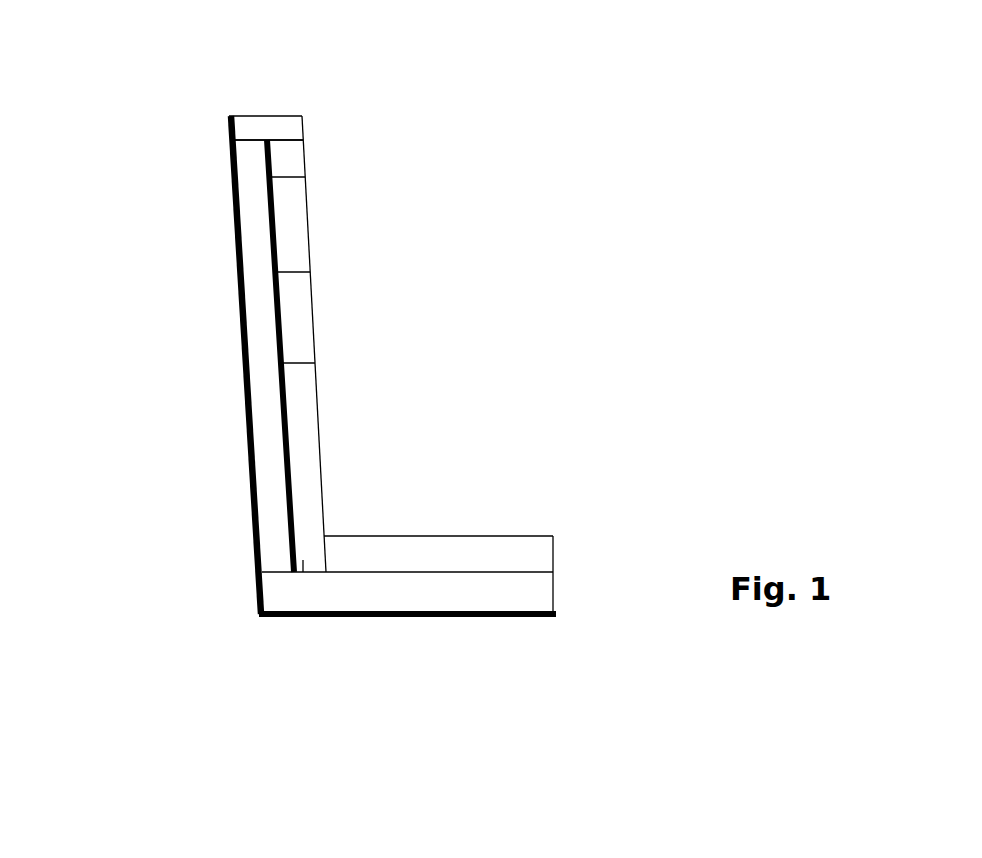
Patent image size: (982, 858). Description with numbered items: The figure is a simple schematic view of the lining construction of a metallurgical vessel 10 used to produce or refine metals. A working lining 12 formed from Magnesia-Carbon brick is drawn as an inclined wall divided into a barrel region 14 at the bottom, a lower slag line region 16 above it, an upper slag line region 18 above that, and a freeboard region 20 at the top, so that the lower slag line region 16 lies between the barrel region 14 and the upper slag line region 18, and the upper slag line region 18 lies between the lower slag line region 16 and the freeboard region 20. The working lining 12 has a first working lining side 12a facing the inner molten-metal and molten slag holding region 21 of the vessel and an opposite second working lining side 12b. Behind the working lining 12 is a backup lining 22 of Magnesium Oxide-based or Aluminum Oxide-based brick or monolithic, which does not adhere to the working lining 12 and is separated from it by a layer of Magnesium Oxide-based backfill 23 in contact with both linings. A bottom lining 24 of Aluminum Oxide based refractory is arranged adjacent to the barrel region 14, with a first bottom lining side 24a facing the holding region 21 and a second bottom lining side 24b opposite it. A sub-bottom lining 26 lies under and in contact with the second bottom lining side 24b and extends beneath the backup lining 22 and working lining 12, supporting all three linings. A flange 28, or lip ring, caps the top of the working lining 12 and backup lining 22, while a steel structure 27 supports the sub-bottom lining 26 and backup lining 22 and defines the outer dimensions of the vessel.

The metallurgical vessel 10 is at (185, 78).
The working lining 12 is at (585, 128).
The first working lining side 12a is at (334, 377).
The second working lining side 12b is at (294, 222).
The barrel region 14 is at (317, 468).
The lower slag line region 16 is at (308, 292).
The upper slag line region 18 is at (303, 197).
The freeboard region 20 is at (300, 158).
The inner molten-metal and molten slag holding region 21 is at (541, 130).
The backup lining 22 is at (265, 262).
The Magnesium Oxide-based backfill 23 is at (278, 342).
The bottom lining 24 is at (417, 553).
The first bottom lining side 24a is at (510, 545).
The second bottom lining side 24b is at (543, 589).
The sub-bottom lining 26 is at (297, 605).
The steel structure 27 is at (247, 418).
The flange 28 is at (262, 122).